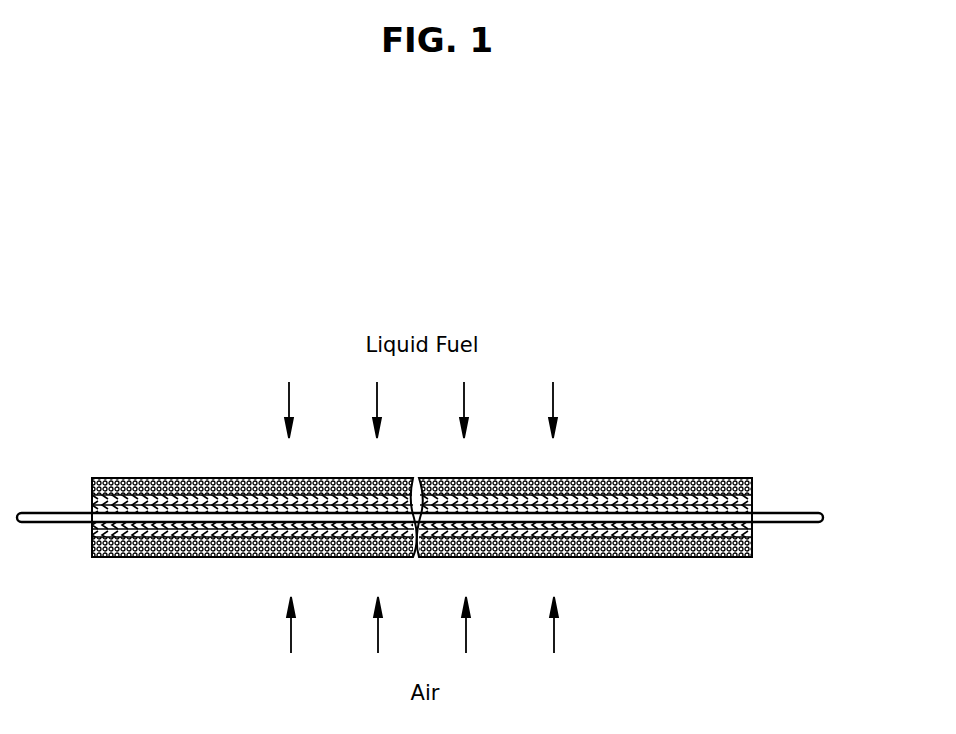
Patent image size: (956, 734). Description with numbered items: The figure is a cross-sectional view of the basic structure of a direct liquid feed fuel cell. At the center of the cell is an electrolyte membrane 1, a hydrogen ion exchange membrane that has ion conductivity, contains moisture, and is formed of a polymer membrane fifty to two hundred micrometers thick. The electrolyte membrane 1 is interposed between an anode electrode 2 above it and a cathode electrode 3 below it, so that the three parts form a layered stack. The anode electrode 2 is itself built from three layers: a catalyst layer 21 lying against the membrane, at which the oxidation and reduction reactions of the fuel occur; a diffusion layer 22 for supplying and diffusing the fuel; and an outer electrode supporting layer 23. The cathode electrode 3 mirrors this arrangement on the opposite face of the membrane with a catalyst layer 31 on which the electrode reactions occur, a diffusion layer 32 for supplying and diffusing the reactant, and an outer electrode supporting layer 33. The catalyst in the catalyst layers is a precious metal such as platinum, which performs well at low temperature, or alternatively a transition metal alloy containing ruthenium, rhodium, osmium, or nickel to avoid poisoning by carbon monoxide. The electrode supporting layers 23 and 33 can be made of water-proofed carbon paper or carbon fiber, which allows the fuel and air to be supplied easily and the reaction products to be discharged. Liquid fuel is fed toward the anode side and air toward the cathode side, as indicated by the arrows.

The electrolyte membrane 1 is at (834, 518).
The anode electrode 2 is at (474, 474).
The catalyst layer 21 is at (753, 508).
The diffusion layer 22 is at (753, 497).
The electrode supporting layer 23 is at (753, 484).
The cathode electrode 3 is at (475, 558).
The catalyst layer 31 is at (753, 524).
The diffusion layer 32 is at (753, 533).
The electrode supporting layer 33 is at (753, 550).